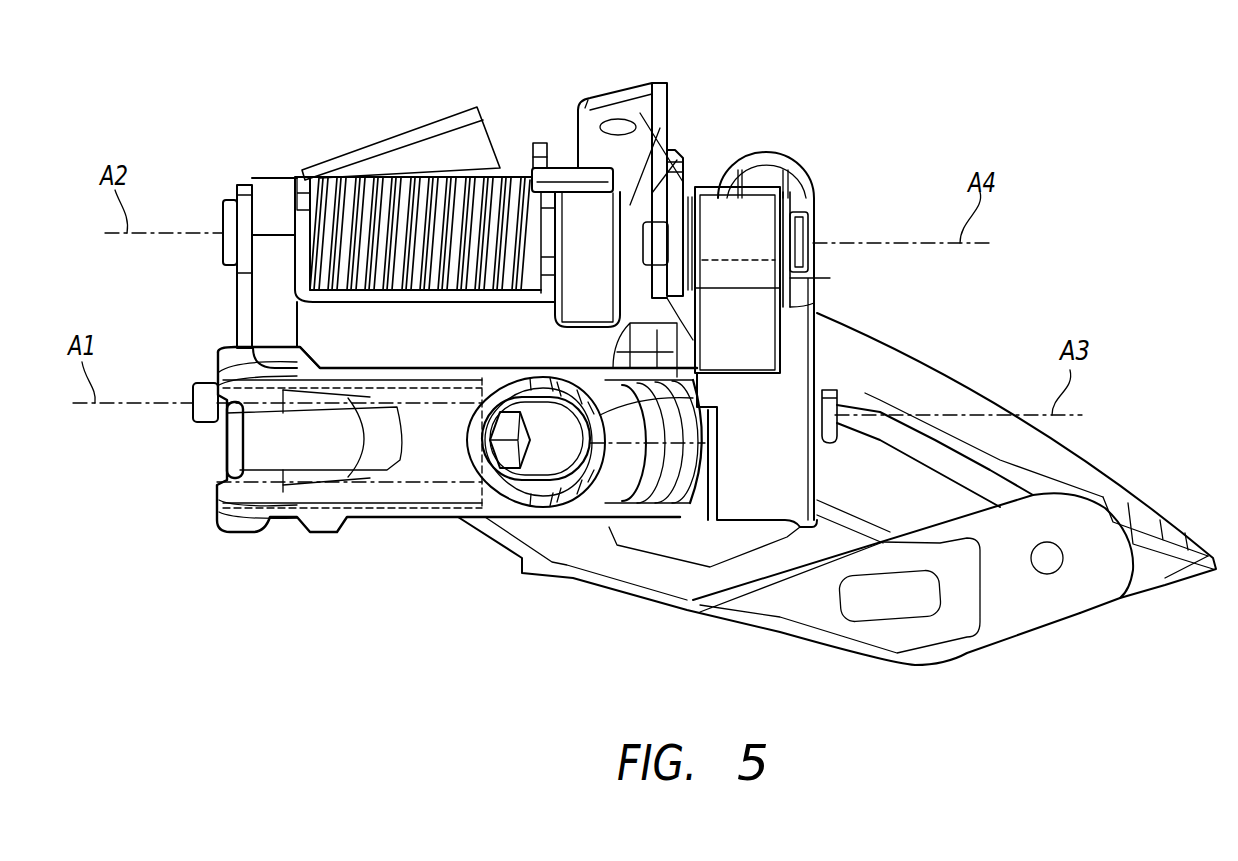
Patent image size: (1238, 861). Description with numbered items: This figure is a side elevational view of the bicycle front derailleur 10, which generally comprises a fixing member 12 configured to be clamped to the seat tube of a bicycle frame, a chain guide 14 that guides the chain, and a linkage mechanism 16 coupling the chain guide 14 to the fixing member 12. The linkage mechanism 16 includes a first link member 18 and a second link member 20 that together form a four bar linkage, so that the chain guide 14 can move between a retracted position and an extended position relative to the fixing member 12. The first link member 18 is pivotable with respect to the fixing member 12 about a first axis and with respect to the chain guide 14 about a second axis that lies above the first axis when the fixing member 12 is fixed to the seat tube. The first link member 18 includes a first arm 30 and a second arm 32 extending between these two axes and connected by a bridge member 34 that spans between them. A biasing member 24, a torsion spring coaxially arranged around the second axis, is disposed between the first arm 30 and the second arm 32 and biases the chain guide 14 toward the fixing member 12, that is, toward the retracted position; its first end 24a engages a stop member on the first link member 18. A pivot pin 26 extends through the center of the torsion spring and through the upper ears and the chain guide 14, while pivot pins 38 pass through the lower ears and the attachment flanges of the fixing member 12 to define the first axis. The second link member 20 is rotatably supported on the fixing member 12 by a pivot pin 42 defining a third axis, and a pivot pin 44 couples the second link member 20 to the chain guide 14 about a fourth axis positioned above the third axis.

The bicycle front derailleur 10 is at (933, 175).
The fixing member 12 is at (412, 500).
The chain guide 14 is at (247, 187).
The linkage mechanism 16 is at (138, 281).
The first link member 18 is at (270, 293).
The second link member 20 is at (807, 280).
The biasing member 24 is at (502, 187).
The first end of the biasing member 24a is at (542, 143).
The pivot pin 26 is at (223, 215).
The first arm 30 is at (635, 217).
The second arm 32 is at (273, 203).
The bridge member 34 is at (455, 347).
The pivot pins 38 is at (205, 418).
The pivot pin 42 is at (840, 400).
The pivot pin 44 is at (803, 230).